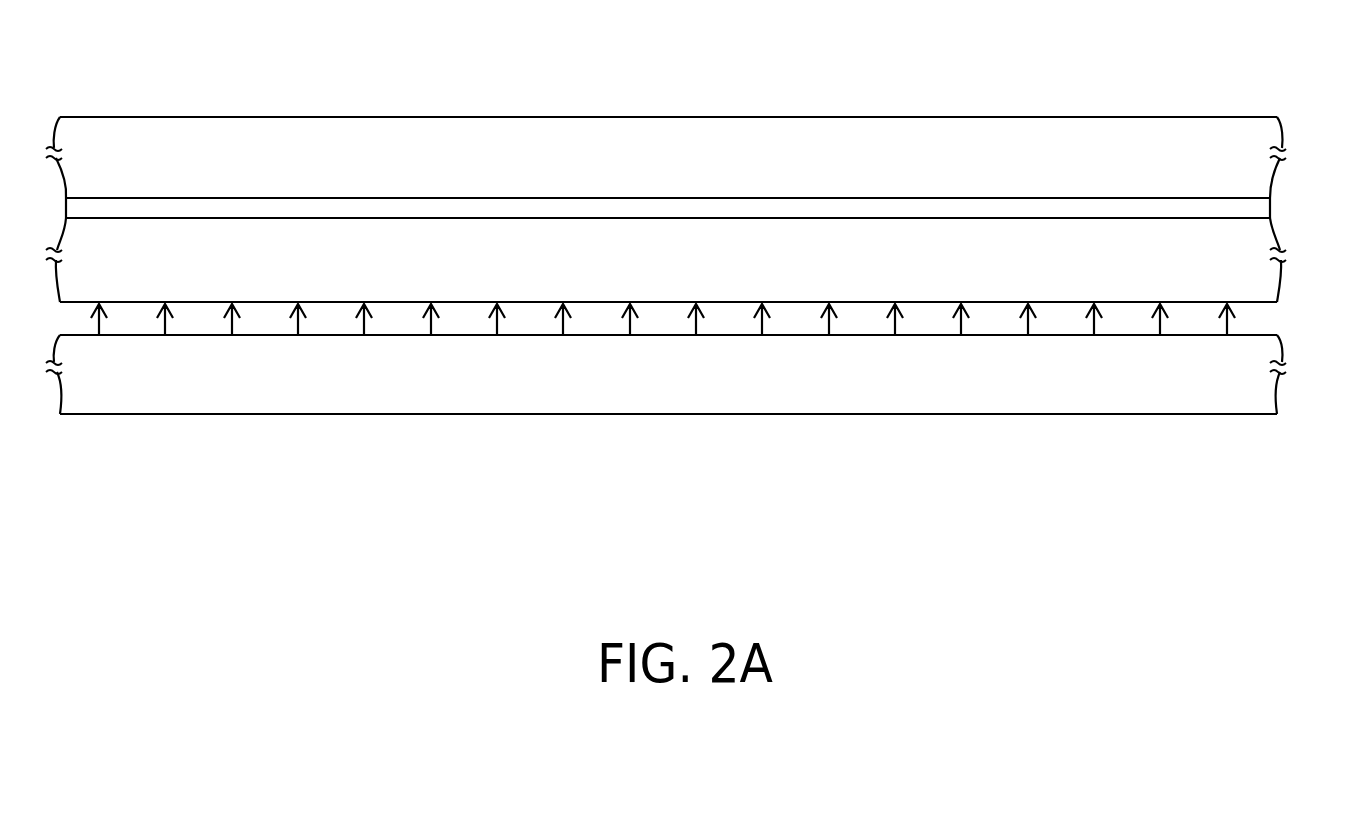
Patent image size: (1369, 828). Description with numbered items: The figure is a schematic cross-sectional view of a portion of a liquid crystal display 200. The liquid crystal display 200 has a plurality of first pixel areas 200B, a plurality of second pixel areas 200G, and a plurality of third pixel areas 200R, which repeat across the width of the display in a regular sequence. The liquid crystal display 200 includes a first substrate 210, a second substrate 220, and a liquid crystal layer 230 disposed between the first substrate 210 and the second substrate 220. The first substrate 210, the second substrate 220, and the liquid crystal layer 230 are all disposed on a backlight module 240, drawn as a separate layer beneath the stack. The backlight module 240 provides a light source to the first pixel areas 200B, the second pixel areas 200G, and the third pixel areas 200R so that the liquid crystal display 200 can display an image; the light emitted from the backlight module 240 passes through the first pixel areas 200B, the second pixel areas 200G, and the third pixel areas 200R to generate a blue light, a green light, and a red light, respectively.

The liquid crystal display 200 is at (707, 277).
The first pixel areas 200B is at (998, 293).
The second pixel areas 200G is at (1263, 94).
The third pixel areas 200R is at (1263, 293).
The first substrate 210 is at (1300, 221).
The second substrate 220 is at (1300, 117).
The liquid crystal layer 230 is at (1300, 202).
The backlight module 240 is at (1263, 398).